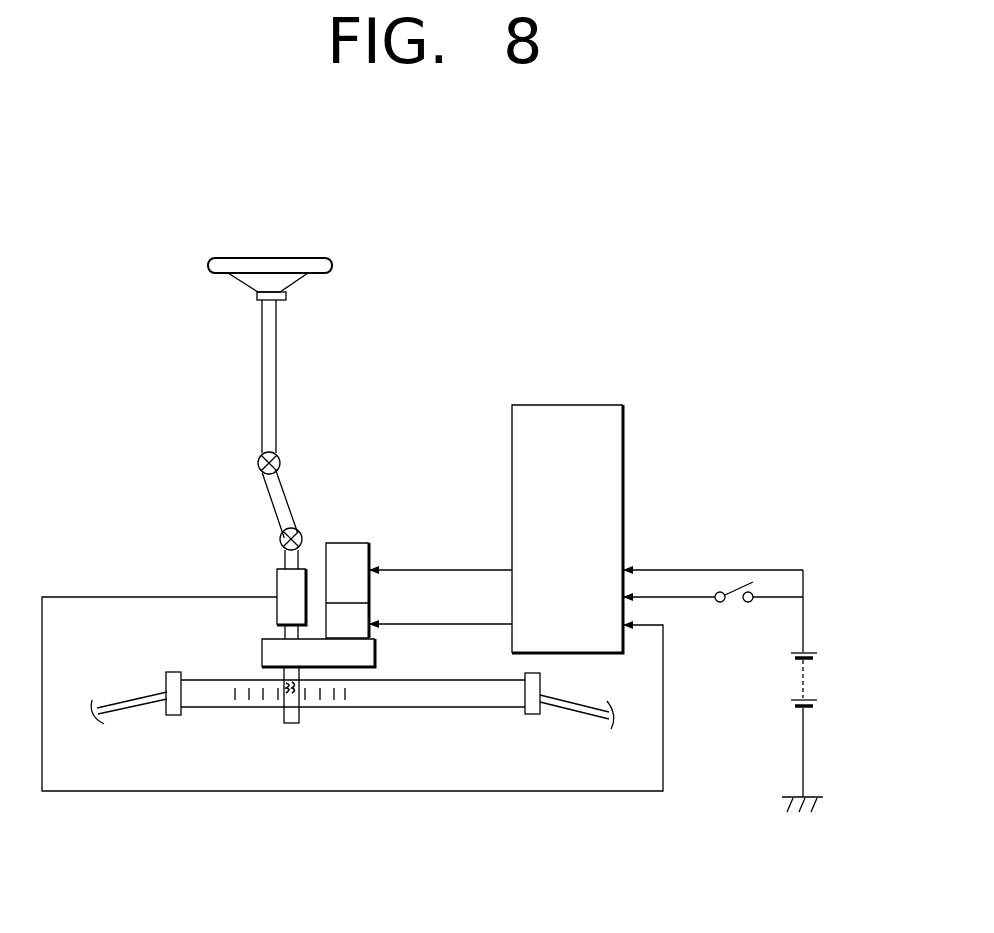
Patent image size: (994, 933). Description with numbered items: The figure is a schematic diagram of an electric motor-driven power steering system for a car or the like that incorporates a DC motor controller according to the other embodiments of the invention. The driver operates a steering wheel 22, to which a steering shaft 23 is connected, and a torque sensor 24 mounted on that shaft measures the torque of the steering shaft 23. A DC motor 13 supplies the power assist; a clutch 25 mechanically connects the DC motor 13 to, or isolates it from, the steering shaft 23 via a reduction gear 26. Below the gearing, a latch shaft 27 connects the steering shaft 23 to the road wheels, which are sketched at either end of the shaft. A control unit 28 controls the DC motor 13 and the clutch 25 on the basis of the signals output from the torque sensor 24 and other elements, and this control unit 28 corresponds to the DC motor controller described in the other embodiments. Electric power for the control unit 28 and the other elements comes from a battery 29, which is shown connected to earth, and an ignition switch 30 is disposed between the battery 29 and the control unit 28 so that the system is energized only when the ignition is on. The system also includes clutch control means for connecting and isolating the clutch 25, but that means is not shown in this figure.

The DC motor 13 is at (348, 541).
The steering wheel 22 is at (333, 265).
The steering shaft 23 is at (278, 395).
The torque sensor 24 is at (275, 575).
The clutch 25 is at (357, 620).
The reduction gear 26 is at (368, 650).
The latch shaft 27 is at (412, 702).
The control unit 28 is at (570, 403).
The battery 29 is at (808, 676).
The ignition switch 30 is at (730, 600).